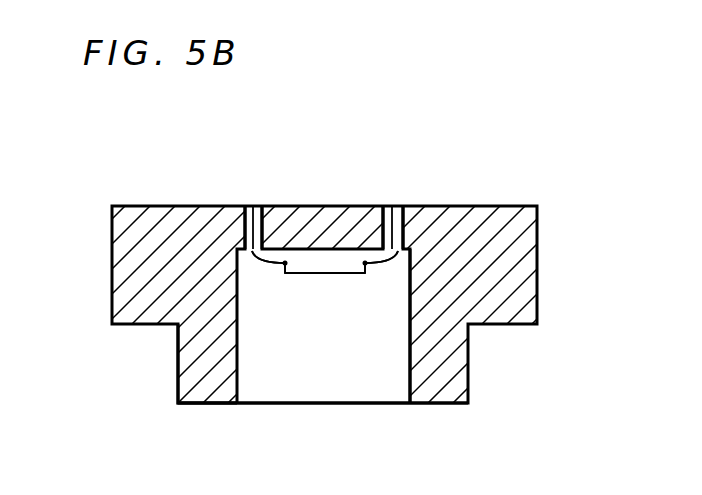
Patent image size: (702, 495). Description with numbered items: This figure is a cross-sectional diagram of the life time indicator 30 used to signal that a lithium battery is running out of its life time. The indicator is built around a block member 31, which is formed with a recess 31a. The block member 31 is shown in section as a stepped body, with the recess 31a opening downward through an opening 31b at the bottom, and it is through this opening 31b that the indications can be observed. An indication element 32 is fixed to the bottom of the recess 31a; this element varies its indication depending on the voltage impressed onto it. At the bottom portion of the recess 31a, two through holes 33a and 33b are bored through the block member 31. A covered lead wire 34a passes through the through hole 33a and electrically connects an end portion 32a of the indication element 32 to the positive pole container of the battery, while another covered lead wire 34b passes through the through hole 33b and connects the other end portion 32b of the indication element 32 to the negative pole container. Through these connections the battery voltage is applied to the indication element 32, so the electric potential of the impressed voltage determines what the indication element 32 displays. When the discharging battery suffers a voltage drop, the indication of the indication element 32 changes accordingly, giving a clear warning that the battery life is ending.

The life time indicator 30 is at (615, 165).
The block member 31 is at (202, 397).
The recess 31a is at (408, 372).
The opening 31b is at (303, 413).
The indication element 32 is at (322, 274).
The end portion of indication element 32a is at (365, 263).
The another end portion of indication element 32b is at (283, 268).
The through hole 33a is at (400, 210).
The through hole 33b is at (245, 205).
The covered lead wire 34a is at (392, 206).
The covered lead wire 34b is at (253, 206).